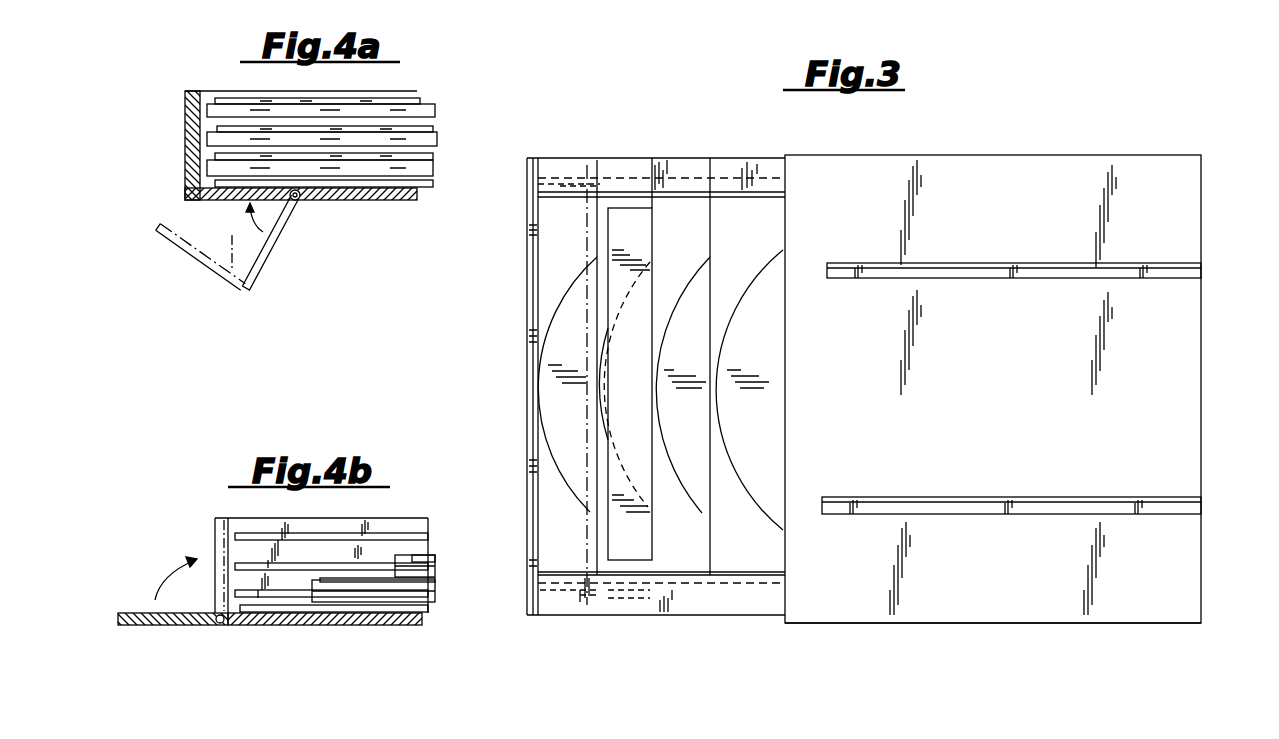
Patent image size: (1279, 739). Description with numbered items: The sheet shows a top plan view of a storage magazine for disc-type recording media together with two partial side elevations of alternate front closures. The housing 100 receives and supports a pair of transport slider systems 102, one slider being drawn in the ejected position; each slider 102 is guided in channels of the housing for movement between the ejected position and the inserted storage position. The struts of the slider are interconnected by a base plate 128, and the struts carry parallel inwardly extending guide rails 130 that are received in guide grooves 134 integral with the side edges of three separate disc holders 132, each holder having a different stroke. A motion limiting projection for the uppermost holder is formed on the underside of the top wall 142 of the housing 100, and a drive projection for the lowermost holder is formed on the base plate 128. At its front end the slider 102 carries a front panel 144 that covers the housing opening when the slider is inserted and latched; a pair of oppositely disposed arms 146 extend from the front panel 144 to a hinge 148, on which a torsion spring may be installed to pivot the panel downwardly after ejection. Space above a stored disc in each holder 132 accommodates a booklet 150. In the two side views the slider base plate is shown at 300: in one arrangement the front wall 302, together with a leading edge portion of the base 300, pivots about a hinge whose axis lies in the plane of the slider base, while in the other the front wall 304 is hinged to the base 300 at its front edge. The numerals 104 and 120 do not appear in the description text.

In FIG. 3, the housing 100 is at (1085, 633).
In FIG. 3, the transport slider system 102 is at (707, 623).
In FIG. 3, the shelf 104 is at (904, 150).
In FIG. 3, the housing wall 120 is at (1212, 174).
In FIG. 3, the base plate 128 is at (563, 203).
In FIG. 3, the guide rail 130 is at (762, 190).
In FIG. 3, the disc holder 132 is at (606, 205).
In FIG. 3, the guide groove 134 is at (680, 349).
In FIG. 3, the top wall 142 is at (985, 580).
In FIG. 3, the front panel 144 is at (526, 458).
In FIG. 3, the arm 146 is at (557, 587).
In FIG. 3, the hinge 148 is at (630, 587).
In FIG. 3, the booklet 150 is at (628, 230).
In FIG. 4A, the slider base plate 300 is at (338, 201).
In FIG. 4B, the slider base plate 300 is at (322, 626).
In FIG. 4A, the front wall 302 is at (232, 201).
In FIG. 4B, the front wall 304 is at (165, 626).